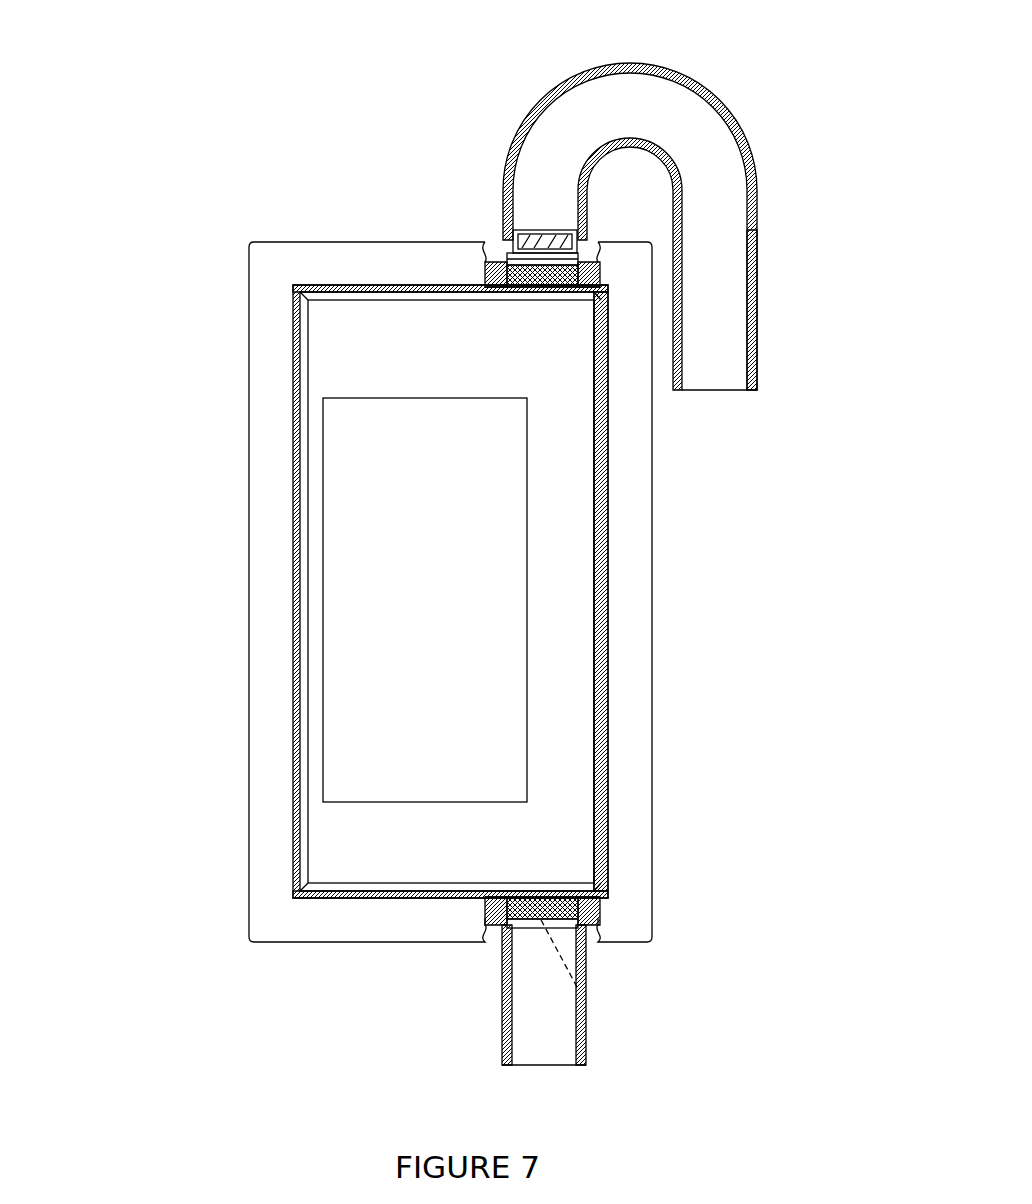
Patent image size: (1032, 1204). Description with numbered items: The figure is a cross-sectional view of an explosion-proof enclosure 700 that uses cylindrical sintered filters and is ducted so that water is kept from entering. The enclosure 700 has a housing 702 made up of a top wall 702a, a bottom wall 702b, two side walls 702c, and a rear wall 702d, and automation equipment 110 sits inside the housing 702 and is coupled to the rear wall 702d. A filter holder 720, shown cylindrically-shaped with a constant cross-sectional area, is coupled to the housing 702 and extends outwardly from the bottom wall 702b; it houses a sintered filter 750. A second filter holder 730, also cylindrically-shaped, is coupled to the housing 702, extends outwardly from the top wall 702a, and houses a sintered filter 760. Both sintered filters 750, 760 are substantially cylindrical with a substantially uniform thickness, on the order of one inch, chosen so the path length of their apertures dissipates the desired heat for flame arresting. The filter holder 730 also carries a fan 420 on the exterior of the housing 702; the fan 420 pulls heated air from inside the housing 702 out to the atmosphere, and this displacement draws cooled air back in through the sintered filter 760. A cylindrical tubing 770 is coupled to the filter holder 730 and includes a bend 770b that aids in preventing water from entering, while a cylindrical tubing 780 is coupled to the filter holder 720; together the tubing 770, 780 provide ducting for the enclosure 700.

The explosion-proof enclosure 700 is at (166, 104).
The fan 420 is at (530, 238).
The filter holder 730 is at (588, 240).
The sintered filter 760 is at (578, 256).
The bend 770b is at (762, 246).
The cylindrical tubing 770 is at (712, 362).
The housing 702 is at (644, 486).
The automation equipment 110 is at (505, 605).
The side walls 702c is at (268, 568).
The rear wall 702d is at (560, 730).
The top wall 702a is at (328, 268).
The bottom wall 702b is at (378, 920).
The filter holder 720 is at (590, 945).
The sintered filter 750 is at (585, 1012).
The cylindrical tubing 780 is at (586, 1065).